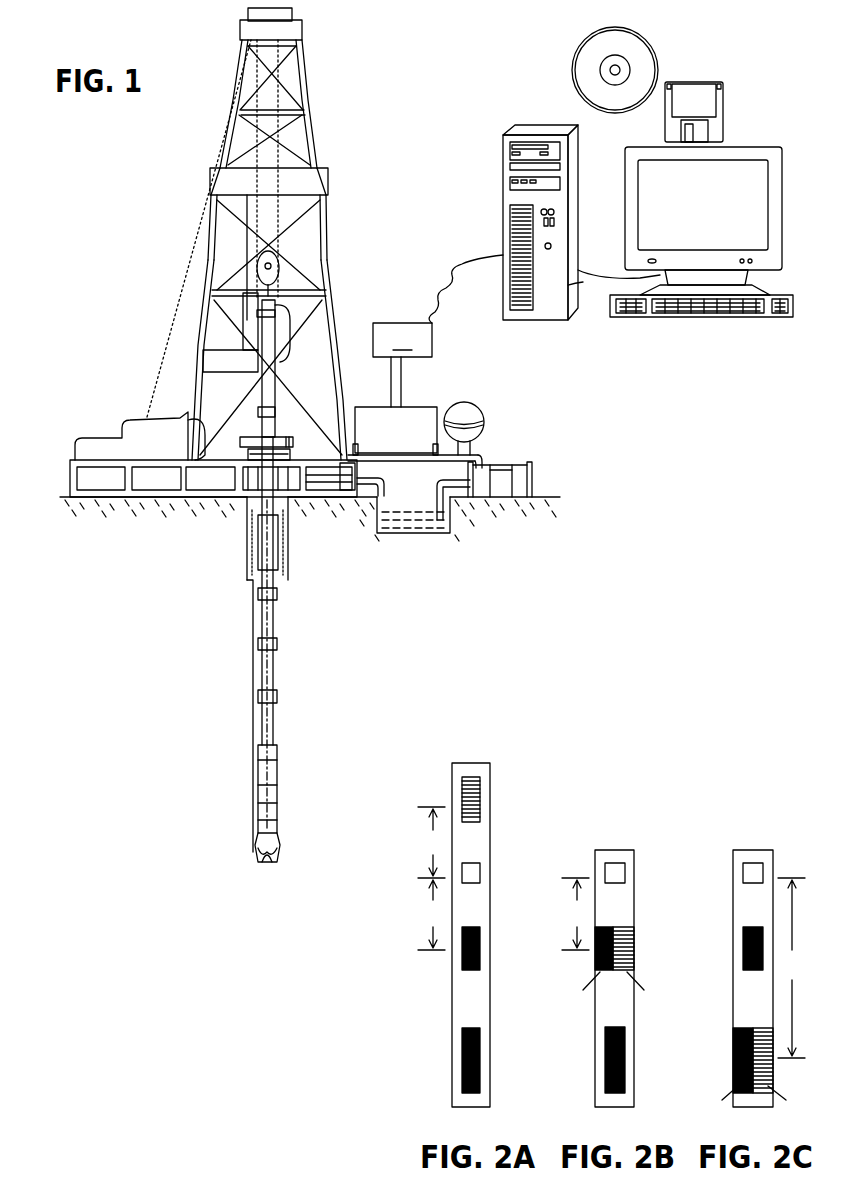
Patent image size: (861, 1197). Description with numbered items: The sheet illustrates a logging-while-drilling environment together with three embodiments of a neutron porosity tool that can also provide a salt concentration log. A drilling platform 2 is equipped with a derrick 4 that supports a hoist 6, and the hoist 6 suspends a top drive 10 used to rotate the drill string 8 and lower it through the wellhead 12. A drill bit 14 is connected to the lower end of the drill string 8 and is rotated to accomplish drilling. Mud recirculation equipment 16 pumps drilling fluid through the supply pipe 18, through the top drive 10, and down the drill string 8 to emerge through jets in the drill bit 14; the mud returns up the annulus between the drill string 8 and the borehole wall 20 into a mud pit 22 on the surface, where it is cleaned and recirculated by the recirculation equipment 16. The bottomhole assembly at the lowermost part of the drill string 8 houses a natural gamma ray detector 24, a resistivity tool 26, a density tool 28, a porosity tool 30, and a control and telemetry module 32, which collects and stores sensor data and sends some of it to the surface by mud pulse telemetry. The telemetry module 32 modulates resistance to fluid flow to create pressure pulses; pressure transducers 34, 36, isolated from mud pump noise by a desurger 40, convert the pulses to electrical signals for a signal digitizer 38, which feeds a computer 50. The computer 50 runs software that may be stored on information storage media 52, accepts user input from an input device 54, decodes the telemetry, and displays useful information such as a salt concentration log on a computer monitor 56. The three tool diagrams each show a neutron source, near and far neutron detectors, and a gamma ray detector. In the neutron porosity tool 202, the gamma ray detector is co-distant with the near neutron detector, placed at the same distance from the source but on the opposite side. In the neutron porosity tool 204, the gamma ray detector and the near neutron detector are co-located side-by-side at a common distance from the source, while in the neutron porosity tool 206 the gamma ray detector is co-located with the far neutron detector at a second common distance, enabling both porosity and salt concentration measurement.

In FIG. 1, the drilling platform 2 is at (70, 470).
In FIG. 1, the derrick 4 is at (312, 152).
In FIG. 1, the hoist 6 is at (280, 265).
In FIG. 1, the drill string 8 is at (272, 626).
In FIG. 1, the top drive 10 is at (268, 332).
In FIG. 1, the wellhead 12 is at (245, 437).
In FIG. 1, the drill bit 14 is at (273, 858).
In FIG. 1, the mud recirculation equipment 16 is at (486, 470).
In FIG. 1, the supply pipe 18 is at (445, 460).
In FIG. 1, the borehole wall 20 is at (282, 633).
In FIG. 1, the mud pit 22 is at (388, 525).
In FIG. 1, the natural gamma ray detector 24 is at (260, 830).
In FIG. 1, the resistivity tool 26 is at (276, 805).
In FIG. 1, the density tool 28 is at (258, 790).
In FIG. 1, the porosity tool 30 is at (276, 770).
In FIG. 1, the control and telemetry module 32 is at (258, 752).
In FIG. 1, the pressure transducer 34 is at (358, 450).
In FIG. 1, the pressure transducer 36 is at (434, 448).
In FIG. 1, the signal digitizer 38 is at (438, 331).
In FIG. 1, the desurger 40 is at (458, 404).
In FIG. 1, the computer 50 is at (572, 245).
In FIG. 1, the information storage media 52 is at (657, 66).
In FIG. 1, the input device 54 is at (770, 317).
In FIG. 1, the computer monitor 56 is at (762, 270).
In FIG. 2A, the neutron porosity tool 202 is at (478, 762).
In FIG. 2B, the neutron porosity tool 204 is at (620, 850).
In FIG. 2C, the neutron porosity tool 206 is at (761, 850).